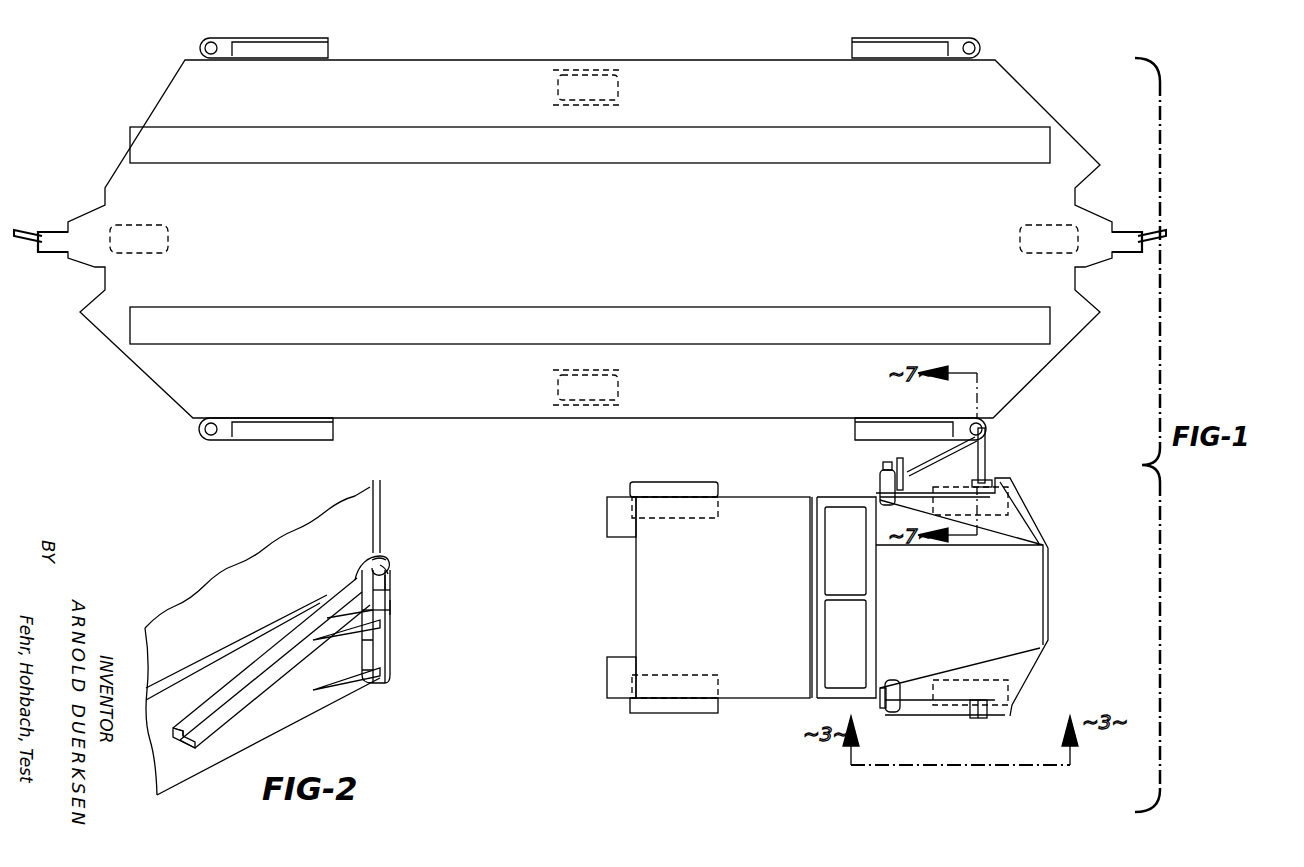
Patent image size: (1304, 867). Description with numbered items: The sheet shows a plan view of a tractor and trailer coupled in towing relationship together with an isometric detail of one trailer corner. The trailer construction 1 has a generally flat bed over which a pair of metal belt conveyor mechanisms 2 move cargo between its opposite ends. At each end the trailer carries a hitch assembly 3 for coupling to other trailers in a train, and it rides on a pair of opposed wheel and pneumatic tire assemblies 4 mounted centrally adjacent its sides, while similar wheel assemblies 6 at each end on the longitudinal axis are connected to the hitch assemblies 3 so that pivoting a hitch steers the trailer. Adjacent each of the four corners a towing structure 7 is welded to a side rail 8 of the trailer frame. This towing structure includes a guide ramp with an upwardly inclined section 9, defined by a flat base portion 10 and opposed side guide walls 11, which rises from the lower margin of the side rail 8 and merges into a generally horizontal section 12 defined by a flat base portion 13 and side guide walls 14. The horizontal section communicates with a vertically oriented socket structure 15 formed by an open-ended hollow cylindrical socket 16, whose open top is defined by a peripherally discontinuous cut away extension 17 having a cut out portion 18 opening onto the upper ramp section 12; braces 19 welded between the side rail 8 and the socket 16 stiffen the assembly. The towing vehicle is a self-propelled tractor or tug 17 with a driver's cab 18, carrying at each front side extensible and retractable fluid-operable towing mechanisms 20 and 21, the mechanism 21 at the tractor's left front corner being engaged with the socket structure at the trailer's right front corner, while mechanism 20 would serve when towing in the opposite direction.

In FIG. 1, the trailer construction 1 is at (560, 28).
In FIG. 1, the metal belt conveyor mechanisms 2 is at (360, 127).
In FIG. 1, the hitch assembly 3 is at (50, 234).
In FIG. 1, the wheel and pneumatic tire assemblies 4 is at (553, 88).
In FIG. 1, the wheel and pneumatic tire assemblies 6 is at (146, 228).
In FIG. 1, the towing structure 7 is at (254, 32).
In FIG. 2, the towing structure 7 is at (366, 694).
In FIG. 2, the side rail 8 is at (220, 665).
In FIG. 2, the upwardly inclined section 9 is at (250, 697).
In FIG. 2, the flat base portion 10 is at (180, 742).
In FIG. 2, the side guide walls 11 is at (237, 705).
In FIG. 2, the horizontal section 12 is at (385, 605).
In FIG. 2, the flat base portion 13 is at (392, 597).
In FIG. 2, the side guide walls 14 is at (345, 603).
In FIG. 2, the socket structure 15 is at (392, 607).
In FIG. 2, the cylindrical socket 16 is at (392, 583).
In FIG. 1, the cut away extension / tractor 17 is at (712, 597).
In FIG. 2, the cut away extension / tractor 17 is at (382, 566).
In FIG. 1, the cut out portion / cab 18 is at (850, 585).
In FIG. 2, the cut out portion / cab 18 is at (390, 570).
In FIG. 2, the braces 19 is at (346, 672).
In FIG. 1, the towing mechanism 20 is at (956, 724).
In FIG. 1, the towing mechanism 21 is at (994, 456).